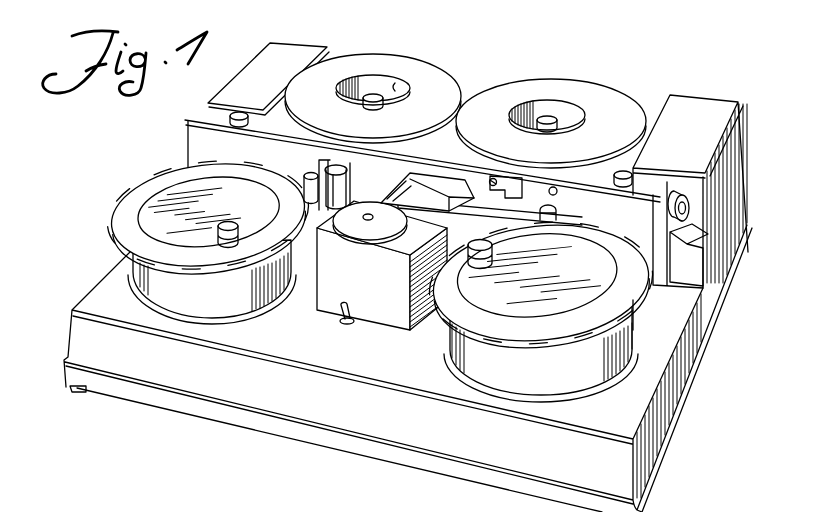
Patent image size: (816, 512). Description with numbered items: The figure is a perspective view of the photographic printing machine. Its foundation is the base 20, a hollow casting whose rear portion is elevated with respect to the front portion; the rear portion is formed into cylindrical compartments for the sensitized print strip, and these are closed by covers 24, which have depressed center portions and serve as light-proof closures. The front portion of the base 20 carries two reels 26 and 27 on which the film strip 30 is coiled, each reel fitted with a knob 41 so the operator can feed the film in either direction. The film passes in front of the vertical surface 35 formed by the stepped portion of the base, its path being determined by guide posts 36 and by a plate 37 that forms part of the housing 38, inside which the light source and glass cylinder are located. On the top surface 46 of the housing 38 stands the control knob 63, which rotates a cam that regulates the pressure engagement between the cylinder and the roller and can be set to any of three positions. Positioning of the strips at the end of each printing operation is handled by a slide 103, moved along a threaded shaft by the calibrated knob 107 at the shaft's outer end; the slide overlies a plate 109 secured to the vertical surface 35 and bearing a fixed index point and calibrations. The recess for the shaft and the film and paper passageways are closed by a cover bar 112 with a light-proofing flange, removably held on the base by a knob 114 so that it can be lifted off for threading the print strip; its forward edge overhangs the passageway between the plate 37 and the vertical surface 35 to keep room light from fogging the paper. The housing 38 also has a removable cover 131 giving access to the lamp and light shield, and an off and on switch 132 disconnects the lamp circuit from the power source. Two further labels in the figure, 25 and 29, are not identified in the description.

The base 20 is at (688, 346).
The covers 24 is at (408, 60).
The reel hub 25 is at (410, 92).
The reel 26 is at (527, 333).
The reel 27 is at (192, 262).
The carriage bracket 29 is at (350, 176).
The film strip 30 is at (637, 329).
The vertical surface 35 is at (210, 145).
The guide posts 36 is at (305, 174).
The plate 37 is at (328, 165).
The housing 38 is at (363, 294).
The knobs 41 is at (227, 224).
The top surface 46 is at (433, 235).
The control knob 63 is at (427, 192).
The slide 103 is at (516, 188).
The calibrated knob 107 is at (690, 207).
The plate 109 is at (557, 203).
The cover bar 112 is at (273, 133).
The knob 114 is at (240, 111).
The removable cover 131 is at (373, 232).
The off and on switch 132 is at (343, 318).